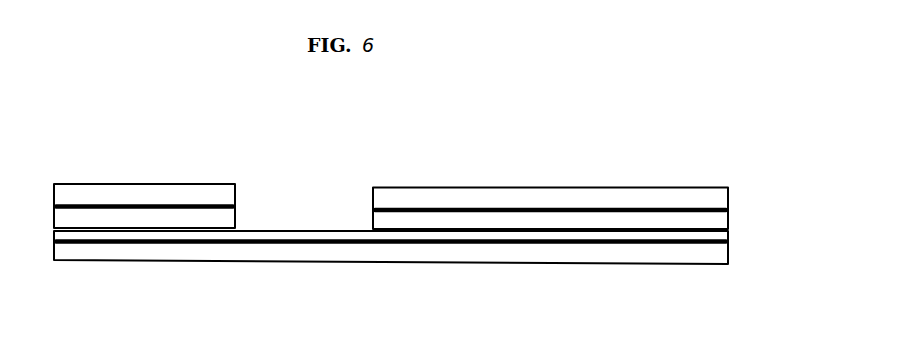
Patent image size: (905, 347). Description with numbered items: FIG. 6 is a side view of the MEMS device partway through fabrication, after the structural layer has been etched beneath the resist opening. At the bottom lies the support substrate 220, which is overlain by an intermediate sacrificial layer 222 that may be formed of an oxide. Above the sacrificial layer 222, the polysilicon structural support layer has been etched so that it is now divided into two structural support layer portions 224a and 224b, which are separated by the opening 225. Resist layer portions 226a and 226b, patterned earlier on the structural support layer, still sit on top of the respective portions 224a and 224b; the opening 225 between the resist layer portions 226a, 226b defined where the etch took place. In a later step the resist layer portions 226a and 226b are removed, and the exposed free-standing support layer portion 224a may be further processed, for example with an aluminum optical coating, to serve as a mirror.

The support substrate 220 is at (635, 253).
The sacrificial layer 222 is at (727, 240).
The structural support layer portion 224a is at (694, 222).
The structural support layer portion 224b is at (180, 218).
The opening 225 is at (303, 217).
The resist layer portion 226a is at (442, 197).
The resist layer portion 226b is at (133, 195).